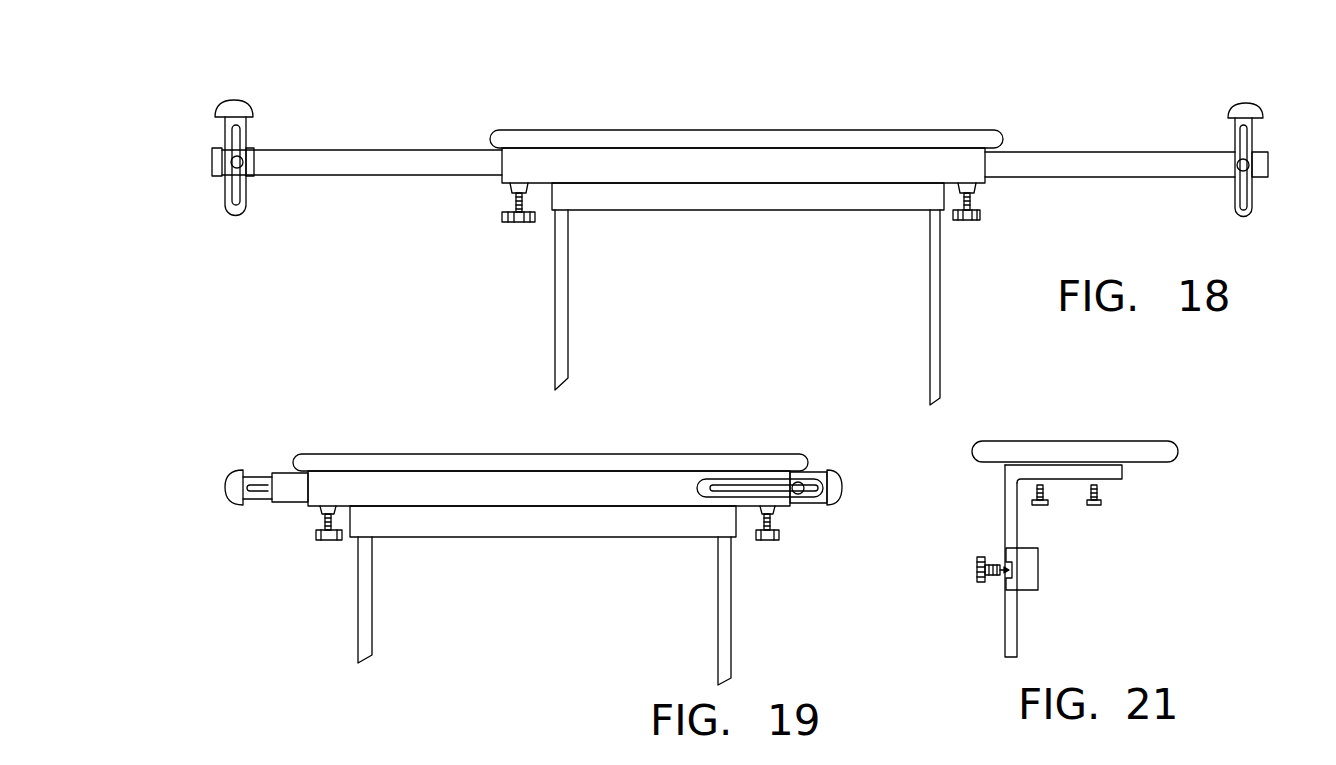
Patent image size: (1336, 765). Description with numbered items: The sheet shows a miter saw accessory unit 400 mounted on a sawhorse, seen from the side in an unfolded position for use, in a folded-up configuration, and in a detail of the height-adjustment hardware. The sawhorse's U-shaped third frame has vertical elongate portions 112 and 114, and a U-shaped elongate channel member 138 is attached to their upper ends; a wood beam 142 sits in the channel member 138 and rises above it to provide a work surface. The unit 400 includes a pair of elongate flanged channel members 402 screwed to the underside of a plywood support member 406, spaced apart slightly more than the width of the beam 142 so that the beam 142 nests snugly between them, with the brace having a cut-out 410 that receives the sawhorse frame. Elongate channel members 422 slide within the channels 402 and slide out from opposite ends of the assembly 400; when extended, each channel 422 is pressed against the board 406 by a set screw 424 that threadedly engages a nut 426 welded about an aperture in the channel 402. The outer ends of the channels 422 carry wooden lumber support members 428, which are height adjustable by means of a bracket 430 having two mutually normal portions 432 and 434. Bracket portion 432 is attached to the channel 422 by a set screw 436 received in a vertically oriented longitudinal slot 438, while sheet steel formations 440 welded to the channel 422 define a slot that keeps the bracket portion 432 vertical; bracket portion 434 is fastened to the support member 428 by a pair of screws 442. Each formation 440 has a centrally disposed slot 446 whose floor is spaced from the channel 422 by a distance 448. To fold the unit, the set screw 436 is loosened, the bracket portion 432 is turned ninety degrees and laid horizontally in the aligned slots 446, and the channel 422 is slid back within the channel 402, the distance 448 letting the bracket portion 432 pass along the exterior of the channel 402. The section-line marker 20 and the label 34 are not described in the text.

In FIG. 18, the section line 20- 20 is at (733, 262).
In FIG. 18, the guide bar 34 is at (1252, 218).
In FIG. 18, the vertical elongate portion 112 is at (940, 311).
In FIG. 19, the vertical elongate portion 112 is at (731, 620).
In FIG. 18, the vertical elongate portion 114 is at (568, 307).
In FIG. 19, the vertical elongate portion 114 is at (372, 606).
In FIG. 18, the channel member 138 is at (818, 201).
In FIG. 19, the channel member 138 is at (620, 527).
In FIG. 18, the wood beam 142 is at (893, 187).
In FIG. 19, the wood beam 142 is at (690, 509).
In FIG. 18, the miter saw accessory unit 400 is at (972, 122).
In FIG. 19, the miter saw accessory unit 400 is at (735, 442).
In FIG. 18, the flanged channel member 402 is at (637, 166).
In FIG. 19, the flanged channel member 402 is at (549, 488).
In FIG. 18, the support member 406 is at (865, 137).
In FIG. 19, the support member 406 is at (620, 462).
In FIG. 19, the cut-out 410 is at (910, 758).
In FIG. 18, the channel member 422 is at (353, 161).
In FIG. 19, the channel member 422 is at (288, 478).
In FIG. 21, the channel member 422 is at (1042, 574).
In FIG. 18, the set screw 424 is at (518, 223).
In FIG. 19, the set screw 424 is at (547, 535).
In FIG. 18, the nut 426 is at (512, 187).
In FIG. 19, the nut 426 is at (318, 515).
In FIG. 18, the lumber support member 428 is at (233, 100).
In FIG. 19, the lumber support member 428 is at (230, 478).
In FIG. 21, the lumber support member 428 is at (1077, 445).
In FIG. 21, the bracket 430 is at (1123, 473).
In FIG. 18, the bracket portion 432 is at (227, 215).
In FIG. 19, the bracket portion 432 is at (783, 501).
In FIG. 21, the bracket portion 432 is at (1012, 631).
In FIG. 21, the bracket portion 434 is at (1102, 470).
In FIG. 18, the set screw 436 is at (232, 170).
In FIG. 19, the set screw 436 is at (804, 483).
In FIG. 21, the set screw 436 is at (980, 583).
In FIG. 18, the longitudinal slot 438 is at (240, 194).
In FIG. 18, the sheet steel formation 440 is at (220, 160).
In FIG. 21, the sheet steel formation 440 is at (1004, 551).
In FIG. 21, the screw 442 is at (1050, 497).
In FIG. 21, the slot 446 is at (1003, 572).
In FIG. 21, the distance 448 is at (1024, 562).